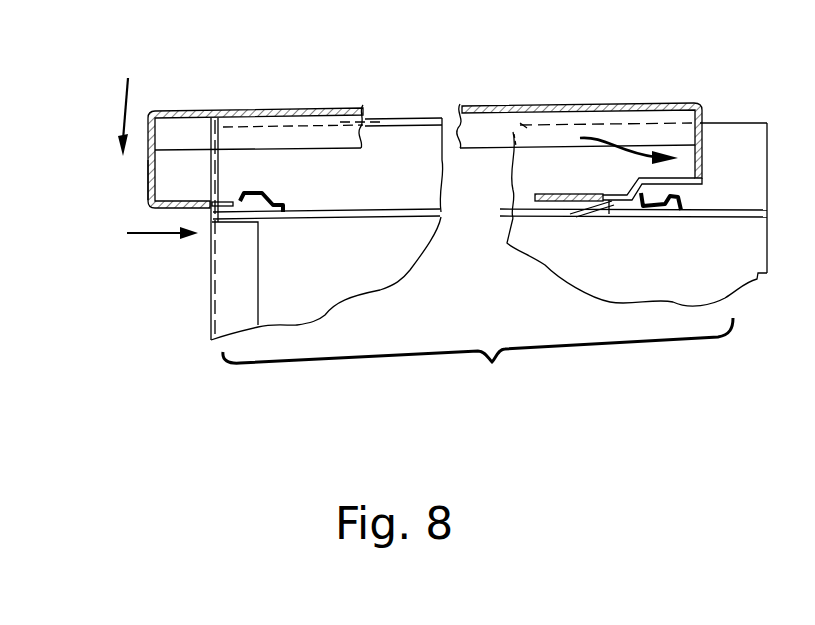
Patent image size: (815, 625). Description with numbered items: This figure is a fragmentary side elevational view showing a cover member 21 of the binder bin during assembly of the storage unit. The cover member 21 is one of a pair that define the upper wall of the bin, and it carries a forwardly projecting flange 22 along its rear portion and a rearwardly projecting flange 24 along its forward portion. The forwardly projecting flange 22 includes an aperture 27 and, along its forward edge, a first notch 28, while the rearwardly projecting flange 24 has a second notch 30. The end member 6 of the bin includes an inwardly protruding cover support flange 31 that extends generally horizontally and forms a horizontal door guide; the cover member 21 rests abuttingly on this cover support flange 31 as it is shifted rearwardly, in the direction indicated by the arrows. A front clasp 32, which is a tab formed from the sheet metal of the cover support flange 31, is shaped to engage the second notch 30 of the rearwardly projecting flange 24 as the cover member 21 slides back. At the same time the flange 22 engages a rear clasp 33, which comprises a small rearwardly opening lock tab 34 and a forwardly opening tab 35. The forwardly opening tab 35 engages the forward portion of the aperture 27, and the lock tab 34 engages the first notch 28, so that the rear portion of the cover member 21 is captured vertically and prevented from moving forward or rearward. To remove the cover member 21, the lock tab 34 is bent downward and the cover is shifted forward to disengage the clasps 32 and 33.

The second end member 6 is at (287, 276).
The cover member 21 is at (347, 110).
The forwardly projecting flange 22 is at (607, 197).
The rearwardly projecting flange 24 is at (190, 200).
The aperture 27 is at (674, 176).
The first notch 28 is at (537, 194).
The second notch 30 is at (221, 200).
The cover support flange 31 is at (302, 208).
The front clasp 32 is at (263, 200).
The rear clasp 33 is at (692, 246).
The lock tab 34 is at (613, 203).
The forwardly opening tab 35 is at (683, 198).